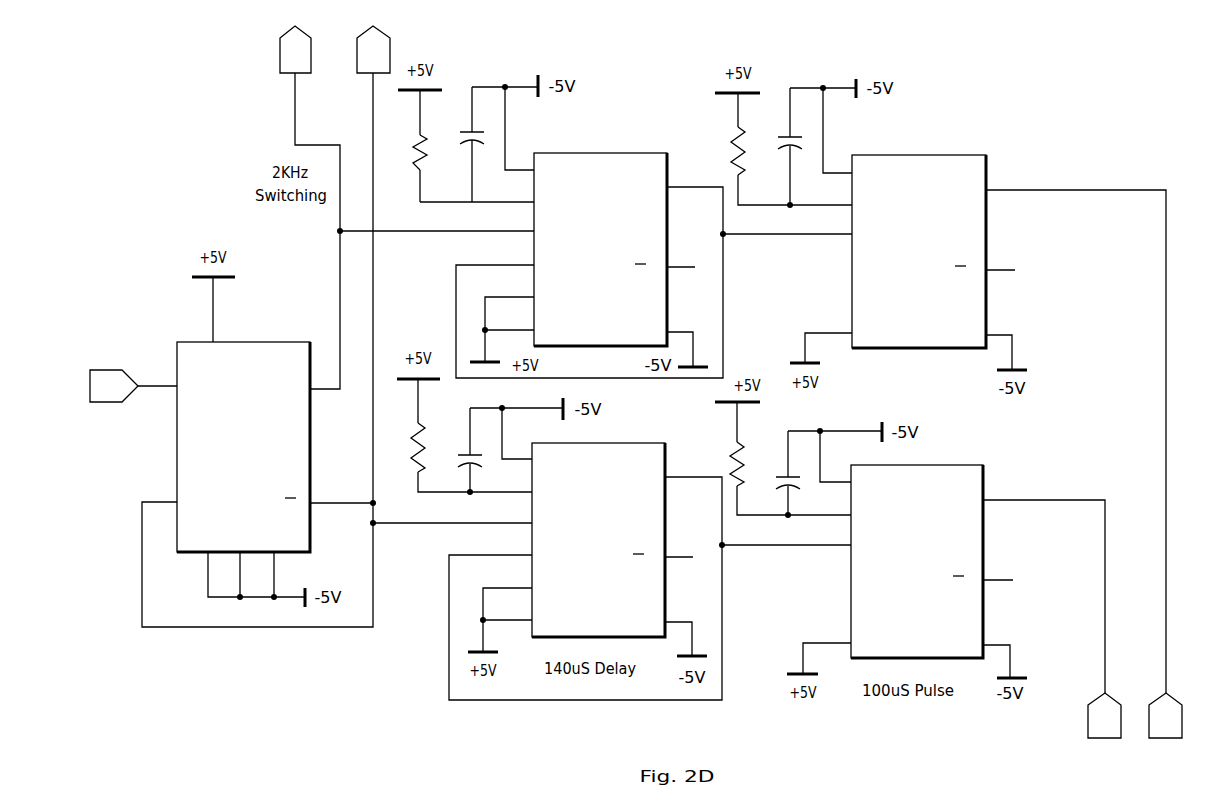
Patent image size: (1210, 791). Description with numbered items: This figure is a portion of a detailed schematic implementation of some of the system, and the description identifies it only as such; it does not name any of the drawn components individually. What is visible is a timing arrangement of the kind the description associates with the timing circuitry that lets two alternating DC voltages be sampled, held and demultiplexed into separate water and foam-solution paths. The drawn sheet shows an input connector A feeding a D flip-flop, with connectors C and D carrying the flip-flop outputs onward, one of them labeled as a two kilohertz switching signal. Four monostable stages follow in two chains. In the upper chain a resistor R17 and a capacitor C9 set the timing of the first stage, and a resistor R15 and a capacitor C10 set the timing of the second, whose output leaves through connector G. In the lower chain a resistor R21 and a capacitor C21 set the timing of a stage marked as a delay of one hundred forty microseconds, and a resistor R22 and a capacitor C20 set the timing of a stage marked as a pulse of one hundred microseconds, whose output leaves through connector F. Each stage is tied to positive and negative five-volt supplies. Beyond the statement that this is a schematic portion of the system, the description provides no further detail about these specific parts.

The timing resistor 1500K R17 is at (403, 161).
The timing resistor 100K R15 is at (719, 151).
The timing resistor 1500K R21 is at (400, 450).
The timing resistor 100K R22 is at (719, 457).
The timing capacitor 1KpF C9 is at (458, 146).
The timing capacitor 1KpF C10 is at (774, 149).
The timing capacitor 1KpF C21 is at (455, 466).
The timing capacitor 1KpF C20 is at (773, 488).
The input connector A is at (114, 386).
The connector C is at (295, 49).
The connector D is at (373, 49).
The output connector F is at (1104, 715).
The output connector G is at (1165, 715).